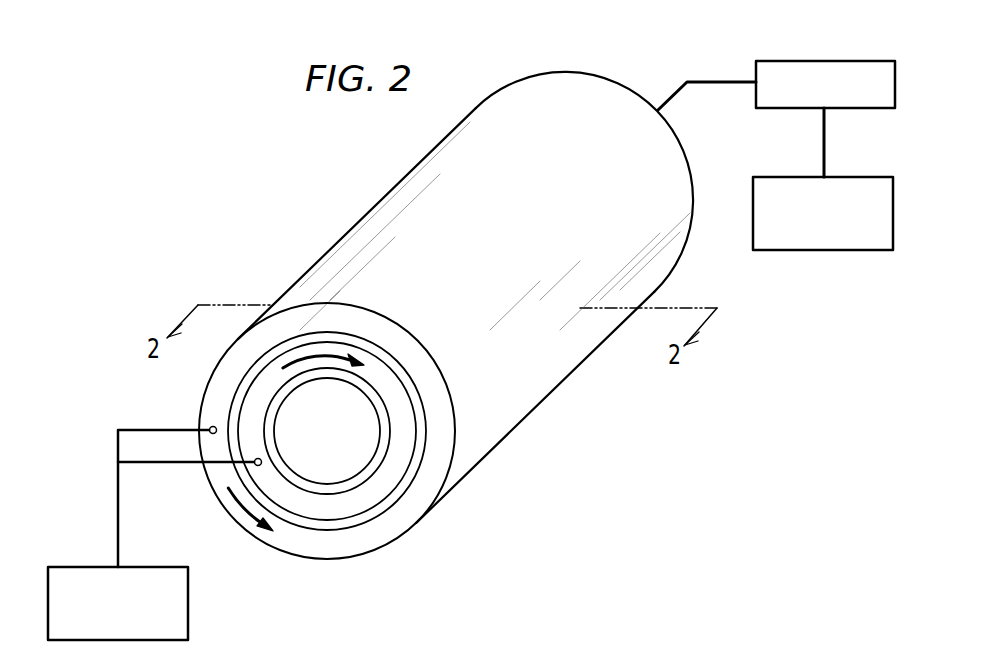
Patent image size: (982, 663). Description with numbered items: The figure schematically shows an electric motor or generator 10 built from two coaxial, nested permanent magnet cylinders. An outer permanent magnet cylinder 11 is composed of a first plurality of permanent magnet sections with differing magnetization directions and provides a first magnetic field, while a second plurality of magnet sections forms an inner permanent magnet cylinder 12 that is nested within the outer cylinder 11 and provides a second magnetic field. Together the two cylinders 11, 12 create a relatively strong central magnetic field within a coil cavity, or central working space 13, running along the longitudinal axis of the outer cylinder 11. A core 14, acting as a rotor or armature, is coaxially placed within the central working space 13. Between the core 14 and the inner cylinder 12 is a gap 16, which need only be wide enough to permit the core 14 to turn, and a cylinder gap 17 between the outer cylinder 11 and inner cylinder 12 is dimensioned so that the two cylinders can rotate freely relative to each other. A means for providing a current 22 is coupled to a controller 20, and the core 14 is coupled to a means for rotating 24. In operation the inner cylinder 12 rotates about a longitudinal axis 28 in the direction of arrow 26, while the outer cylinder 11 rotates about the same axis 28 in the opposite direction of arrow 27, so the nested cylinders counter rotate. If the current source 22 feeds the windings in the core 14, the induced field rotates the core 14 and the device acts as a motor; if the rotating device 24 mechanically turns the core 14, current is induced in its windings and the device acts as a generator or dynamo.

The electric motor or generator 10 is at (265, 169).
The outer permanent magnet cylinder 11 is at (308, 322).
The inner permanent magnet cylinder 12 is at (257, 403).
The central working space 13 is at (355, 455).
The core 14 is at (313, 470).
The gap 16 is at (377, 400).
The cylinder gap 17 is at (378, 513).
The controller 20 is at (830, 61).
The means for providing a current 22 is at (822, 250).
The means for rotating 24 is at (188, 595).
The arrow 26 is at (357, 352).
The arrow 27 is at (247, 518).
The longitudinal axis 28 is at (332, 433).